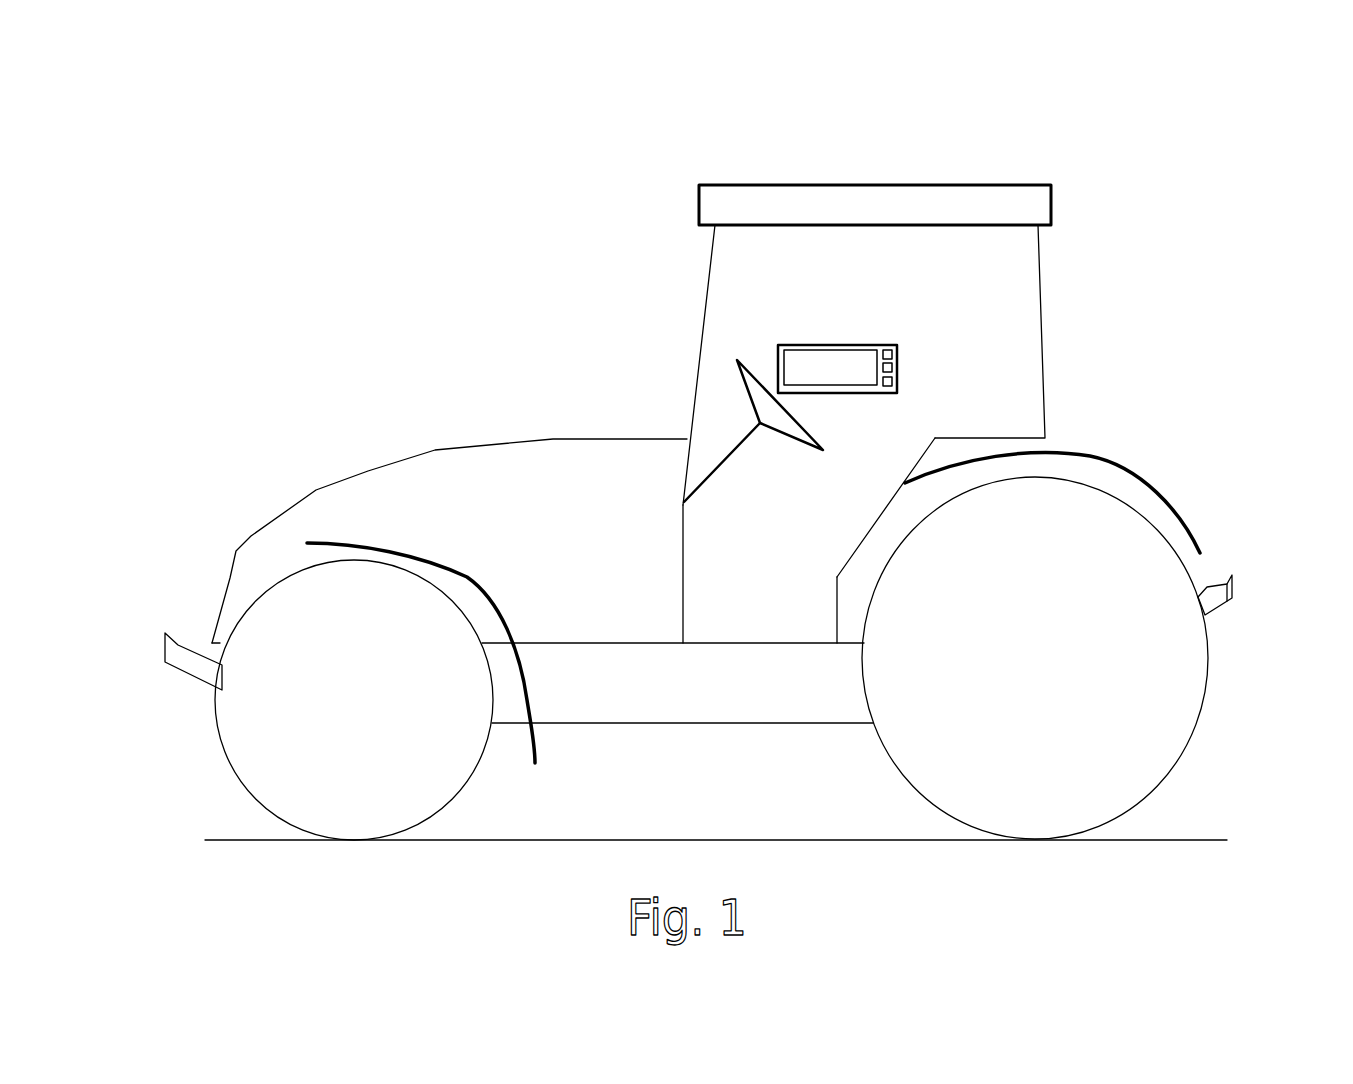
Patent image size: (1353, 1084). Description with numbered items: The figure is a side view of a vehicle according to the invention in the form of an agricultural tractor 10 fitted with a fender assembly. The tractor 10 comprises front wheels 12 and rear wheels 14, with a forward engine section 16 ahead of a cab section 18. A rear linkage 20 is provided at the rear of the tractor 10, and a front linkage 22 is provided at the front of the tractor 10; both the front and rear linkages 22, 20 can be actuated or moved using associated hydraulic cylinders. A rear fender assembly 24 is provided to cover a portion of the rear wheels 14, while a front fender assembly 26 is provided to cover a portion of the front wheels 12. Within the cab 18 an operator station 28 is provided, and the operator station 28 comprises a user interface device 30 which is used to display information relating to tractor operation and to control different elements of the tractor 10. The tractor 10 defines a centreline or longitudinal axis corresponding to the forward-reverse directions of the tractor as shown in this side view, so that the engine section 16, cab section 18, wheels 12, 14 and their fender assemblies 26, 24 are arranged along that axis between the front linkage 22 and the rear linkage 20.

The agricultural tractor 10 is at (263, 170).
The front wheels 12 is at (348, 817).
The rear wheels 14 is at (1068, 792).
The forward engine section 16 is at (378, 490).
The cab section 18 is at (990, 303).
The rear linkage 20 is at (1217, 598).
The front linkage 22 is at (193, 665).
The rear fender assembly 24 is at (1128, 478).
The front fender assembly 26 is at (536, 750).
The operator station 28 is at (668, 331).
The user interface device 30 is at (777, 347).